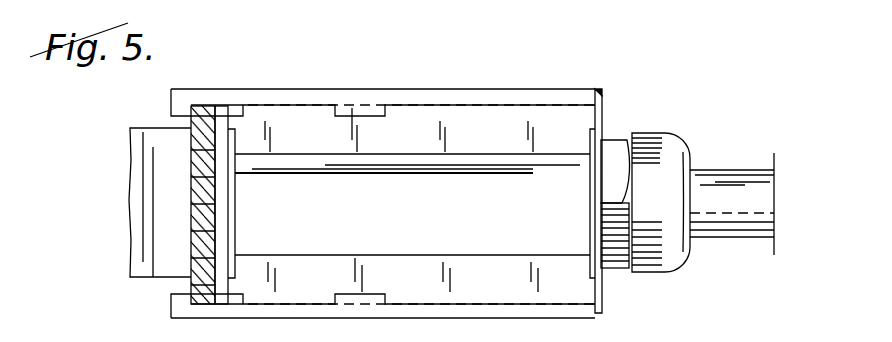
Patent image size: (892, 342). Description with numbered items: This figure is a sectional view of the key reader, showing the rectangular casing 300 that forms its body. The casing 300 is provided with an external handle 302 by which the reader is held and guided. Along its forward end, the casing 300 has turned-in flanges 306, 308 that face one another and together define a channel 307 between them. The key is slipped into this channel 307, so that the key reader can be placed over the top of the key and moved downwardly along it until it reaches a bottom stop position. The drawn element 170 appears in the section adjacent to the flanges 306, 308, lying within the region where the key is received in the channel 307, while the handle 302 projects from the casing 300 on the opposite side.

The rectangular casing 300 is at (318, 89).
The external handle 302 is at (412, 163).
The turned-in flange 306 is at (172, 119).
The channel 307 is at (214, 114).
The turned-in flange 308 is at (192, 297).
The shaft 170 is at (192, 215).